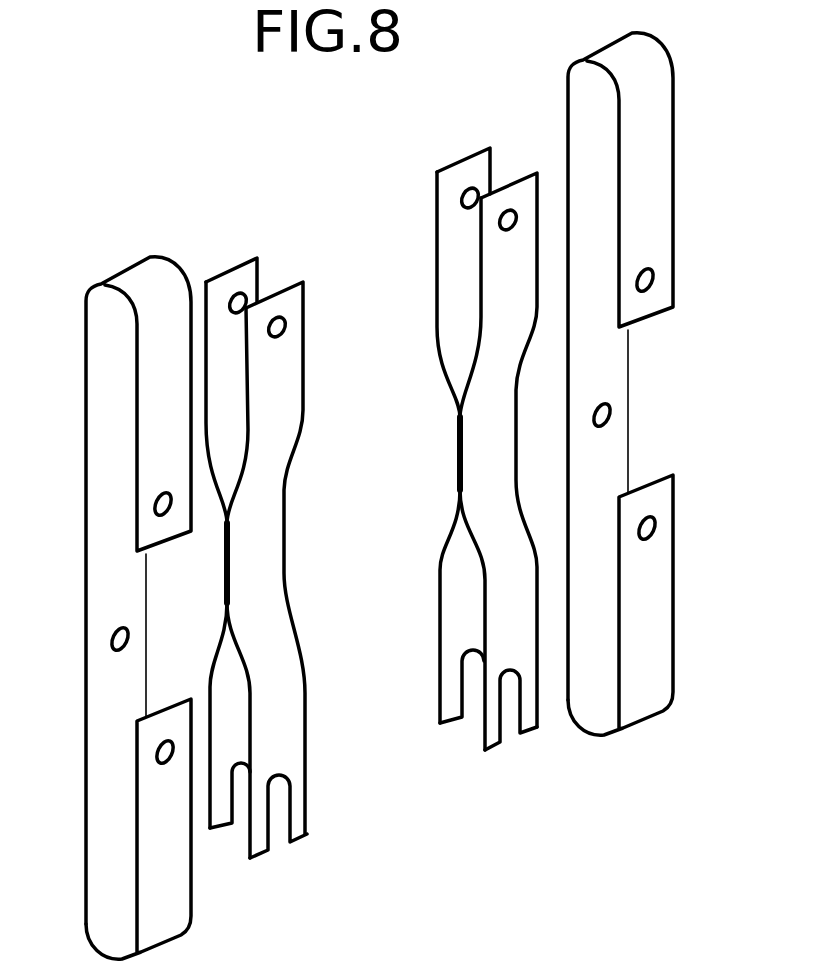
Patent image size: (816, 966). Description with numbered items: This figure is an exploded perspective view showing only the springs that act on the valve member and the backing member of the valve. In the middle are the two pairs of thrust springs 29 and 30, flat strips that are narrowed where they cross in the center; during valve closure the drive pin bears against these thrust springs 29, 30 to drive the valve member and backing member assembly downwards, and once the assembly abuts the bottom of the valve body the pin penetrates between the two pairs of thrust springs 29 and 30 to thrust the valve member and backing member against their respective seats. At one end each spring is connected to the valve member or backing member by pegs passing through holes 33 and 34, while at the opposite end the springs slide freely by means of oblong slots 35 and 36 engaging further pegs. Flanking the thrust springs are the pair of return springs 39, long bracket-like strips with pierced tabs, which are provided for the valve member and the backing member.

The thrust spring 29 is at (278, 408).
The thrust spring 30 is at (218, 320).
The hole 33 is at (286, 332).
The hole 34 is at (238, 294).
The oblong slot 35 is at (277, 818).
The oblong slot 36 is at (240, 798).
The return spring 39 is at (112, 576).